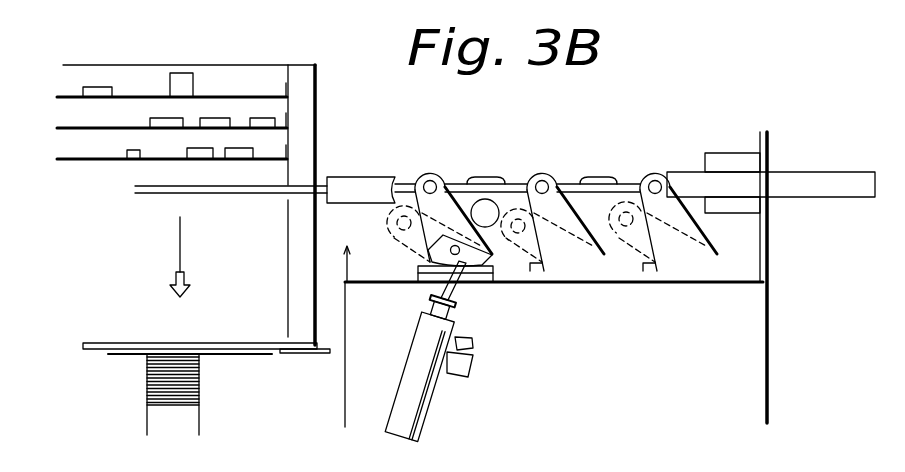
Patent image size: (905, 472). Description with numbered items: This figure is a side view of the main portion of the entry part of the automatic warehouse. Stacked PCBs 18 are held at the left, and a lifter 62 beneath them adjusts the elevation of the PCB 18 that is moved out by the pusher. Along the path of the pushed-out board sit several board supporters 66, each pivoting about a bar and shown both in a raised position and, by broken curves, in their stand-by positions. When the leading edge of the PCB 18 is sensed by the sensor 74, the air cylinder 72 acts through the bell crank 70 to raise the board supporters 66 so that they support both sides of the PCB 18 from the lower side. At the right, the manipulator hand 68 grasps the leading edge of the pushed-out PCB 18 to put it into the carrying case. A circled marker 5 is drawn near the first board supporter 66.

The station number marker 5 is at (485, 213).
The PCB 18 is at (225, 97).
The lifter 62 is at (91, 364).
The board supporter 66 is at (425, 160).
The manipulator hand 68 is at (830, 172).
The bell crank 70 is at (476, 268).
The air cylinder 72 is at (444, 395).
The sensor 74 is at (348, 284).